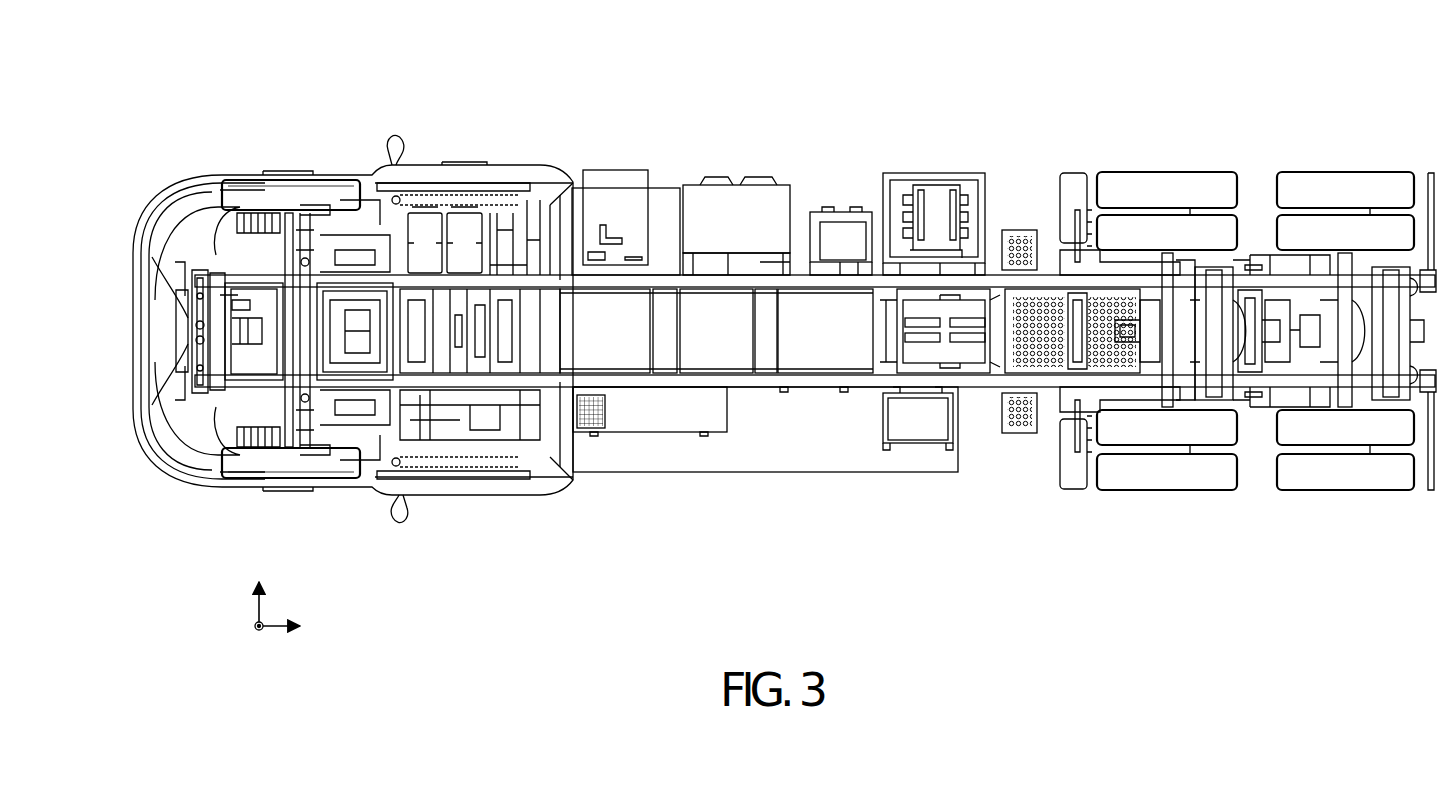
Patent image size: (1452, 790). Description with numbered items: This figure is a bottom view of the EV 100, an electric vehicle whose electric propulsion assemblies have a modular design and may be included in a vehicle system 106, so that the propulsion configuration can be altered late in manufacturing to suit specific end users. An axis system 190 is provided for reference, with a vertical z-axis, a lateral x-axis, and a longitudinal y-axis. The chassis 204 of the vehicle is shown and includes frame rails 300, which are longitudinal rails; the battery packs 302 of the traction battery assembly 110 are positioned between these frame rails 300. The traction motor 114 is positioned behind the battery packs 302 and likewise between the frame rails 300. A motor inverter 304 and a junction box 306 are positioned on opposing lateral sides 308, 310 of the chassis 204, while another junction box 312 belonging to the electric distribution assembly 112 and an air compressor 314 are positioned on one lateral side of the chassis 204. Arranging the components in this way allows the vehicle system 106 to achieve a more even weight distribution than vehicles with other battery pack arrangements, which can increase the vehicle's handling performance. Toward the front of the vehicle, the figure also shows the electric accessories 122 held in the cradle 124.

The EV 100 is at (180, 114).
The vehicle system 106 is at (705, 96).
The traction battery assembly 110 is at (803, 273).
The electric distribution assembly 112 is at (914, 154).
The traction motor 114 is at (960, 352).
The electric accessories 122 is at (208, 300).
The cradle 124 is at (182, 333).
The axis system 190 is at (284, 584).
The chassis 204 is at (752, 404).
The frame rails 300 is at (803, 382).
The battery packs 302 is at (697, 348).
The motor inverter 304 is at (908, 424).
The junction box 306 is at (940, 186).
The lateral side 308 is at (769, 537).
The lateral side 310 is at (931, 124).
The junction box 312 is at (845, 240).
The air compressor 314 is at (612, 198).